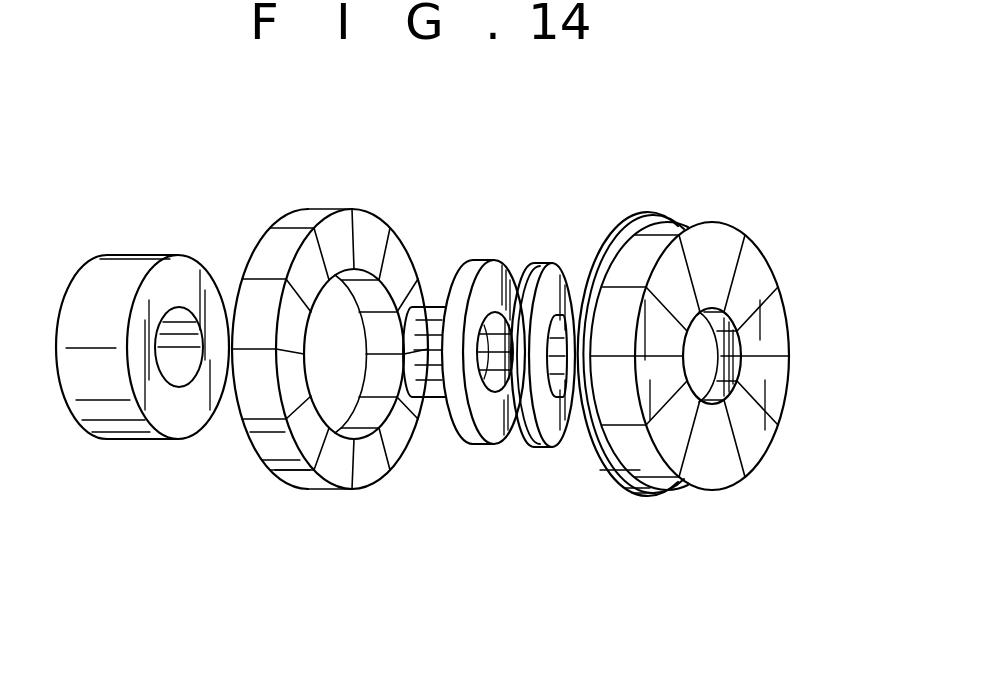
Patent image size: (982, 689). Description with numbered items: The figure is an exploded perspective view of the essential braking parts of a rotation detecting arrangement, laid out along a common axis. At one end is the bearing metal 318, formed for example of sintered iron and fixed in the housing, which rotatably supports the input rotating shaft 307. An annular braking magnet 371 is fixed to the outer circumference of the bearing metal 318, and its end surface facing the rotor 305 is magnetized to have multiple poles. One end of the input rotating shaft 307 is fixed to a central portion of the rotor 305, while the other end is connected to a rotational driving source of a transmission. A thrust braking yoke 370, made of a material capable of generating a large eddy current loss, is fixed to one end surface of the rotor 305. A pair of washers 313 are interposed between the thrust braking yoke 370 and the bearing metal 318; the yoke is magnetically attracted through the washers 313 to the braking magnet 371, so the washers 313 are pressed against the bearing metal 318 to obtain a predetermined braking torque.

The bearing metal 318 is at (150, 438).
The braking magnet 371 is at (318, 490).
The input rotating shaft 307 is at (436, 402).
The washers 313 is at (490, 423).
The thrust braking yoke 370 is at (617, 490).
The rotor 305 is at (707, 463).